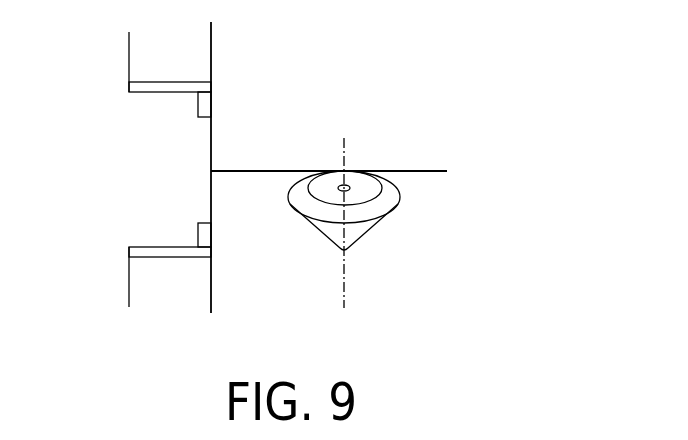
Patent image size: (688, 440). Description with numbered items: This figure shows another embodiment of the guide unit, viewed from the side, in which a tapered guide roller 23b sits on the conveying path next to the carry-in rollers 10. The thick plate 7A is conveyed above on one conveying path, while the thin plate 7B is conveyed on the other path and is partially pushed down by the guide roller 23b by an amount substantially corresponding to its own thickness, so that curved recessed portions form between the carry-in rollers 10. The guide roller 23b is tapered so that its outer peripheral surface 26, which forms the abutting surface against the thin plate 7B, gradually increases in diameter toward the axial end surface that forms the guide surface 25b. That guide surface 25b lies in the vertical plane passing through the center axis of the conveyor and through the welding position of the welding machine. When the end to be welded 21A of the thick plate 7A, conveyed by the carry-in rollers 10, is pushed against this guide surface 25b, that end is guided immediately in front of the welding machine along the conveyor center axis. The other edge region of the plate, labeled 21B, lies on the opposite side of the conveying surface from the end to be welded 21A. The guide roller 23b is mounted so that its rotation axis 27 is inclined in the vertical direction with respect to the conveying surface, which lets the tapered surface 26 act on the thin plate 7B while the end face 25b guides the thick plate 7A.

The carry-in rollers 10 is at (140, 60).
The end to be welded 21A is at (283, 168).
The lower surface of partition 21B is at (243, 168).
The guide roller 23b is at (402, 199).
The guide surface 25b is at (390, 187).
The outer peripheral surface 26 is at (362, 233).
The rotation axis 27 is at (345, 282).
The thick plate 7A is at (354, 101).
The thin plate 7B is at (280, 273).